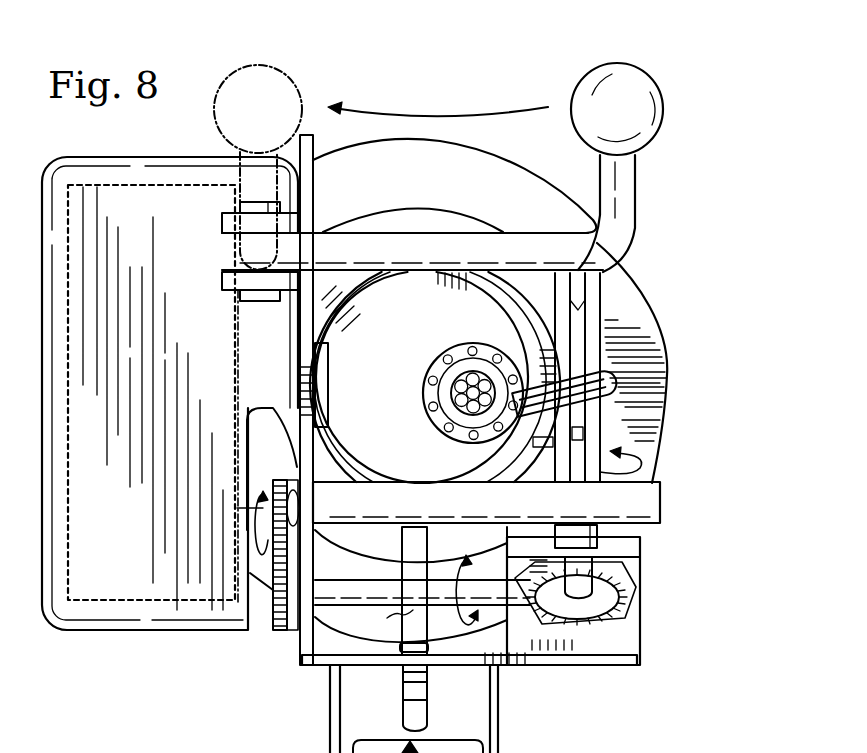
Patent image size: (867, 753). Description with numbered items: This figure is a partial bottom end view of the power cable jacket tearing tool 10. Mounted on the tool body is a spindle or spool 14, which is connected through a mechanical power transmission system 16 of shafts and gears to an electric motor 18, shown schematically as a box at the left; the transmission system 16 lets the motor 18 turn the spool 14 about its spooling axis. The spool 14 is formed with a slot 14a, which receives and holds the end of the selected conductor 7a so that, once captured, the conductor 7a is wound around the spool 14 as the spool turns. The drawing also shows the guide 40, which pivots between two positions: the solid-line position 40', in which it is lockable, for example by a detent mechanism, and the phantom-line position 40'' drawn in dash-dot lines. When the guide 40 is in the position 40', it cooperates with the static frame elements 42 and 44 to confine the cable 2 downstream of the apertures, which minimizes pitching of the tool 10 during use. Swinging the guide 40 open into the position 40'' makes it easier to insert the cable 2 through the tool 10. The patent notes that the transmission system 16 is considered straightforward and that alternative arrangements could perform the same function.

The cable 2 is at (424, 393).
The selected conductor 7a is at (610, 381).
The tool 10 is at (681, 74).
The spool 14 is at (598, 353).
The slot 14a is at (578, 288).
The mechanical power transmission system 16 is at (359, 610).
The electric motor 18 is at (128, 598).
The guide 40 is at (438, 68).
The guide solid-line position 40' is at (595, 102).
The guide phantom-line position 40'' is at (298, 333).
The static frame element 42 is at (306, 203).
The static frame element 44 is at (648, 507).